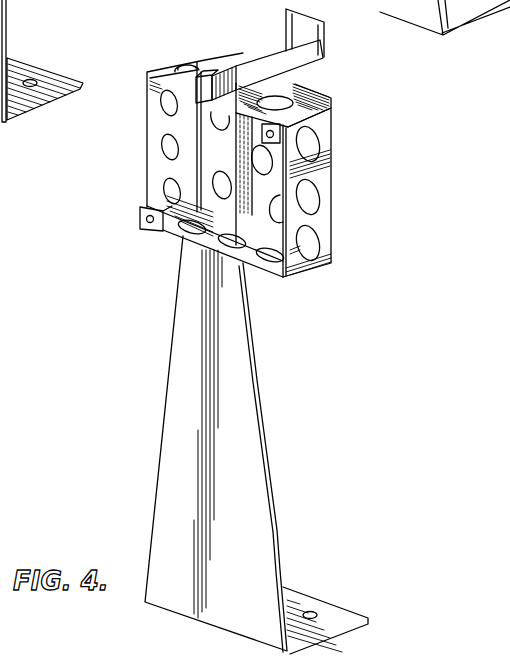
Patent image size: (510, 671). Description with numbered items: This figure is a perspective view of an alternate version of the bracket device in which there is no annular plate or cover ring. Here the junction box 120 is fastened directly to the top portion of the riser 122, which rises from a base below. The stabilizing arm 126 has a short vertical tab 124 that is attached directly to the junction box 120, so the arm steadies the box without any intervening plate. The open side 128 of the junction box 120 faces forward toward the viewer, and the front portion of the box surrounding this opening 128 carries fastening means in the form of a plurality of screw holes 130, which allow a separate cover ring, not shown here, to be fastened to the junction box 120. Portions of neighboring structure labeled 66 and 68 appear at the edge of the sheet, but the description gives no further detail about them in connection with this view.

The upright support member 66 is at (0, 33).
The base plate 68 is at (25, 113).
The junction box 120 is at (320, 220).
The riser 122 is at (170, 368).
The short vertical tab 124 is at (203, 78).
The stabilizing arm 126 is at (266, 60).
The open side 128 is at (212, 152).
The screw holes 130 is at (147, 229).